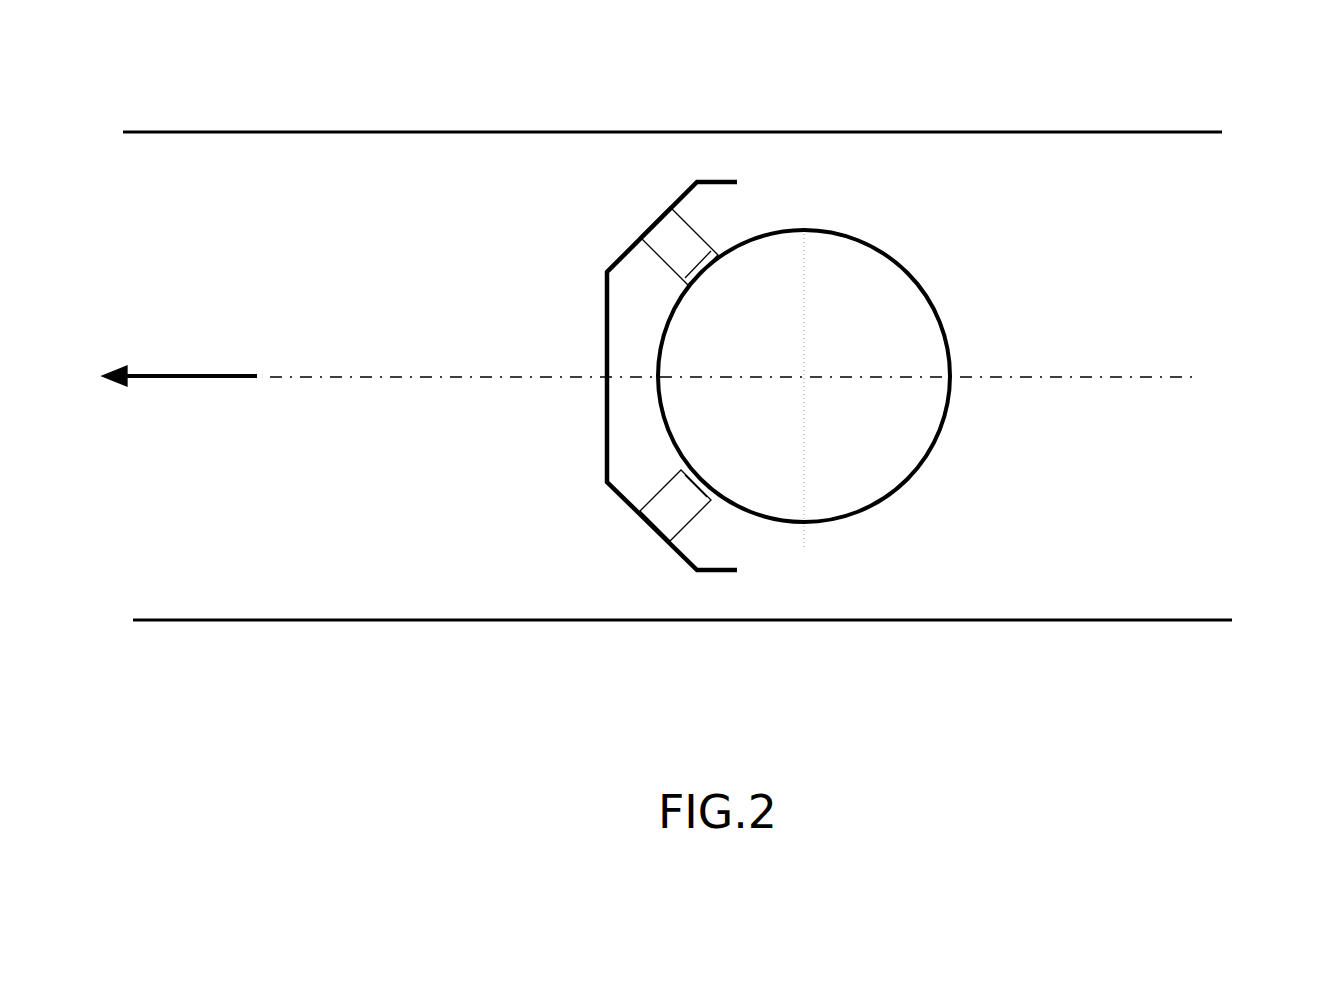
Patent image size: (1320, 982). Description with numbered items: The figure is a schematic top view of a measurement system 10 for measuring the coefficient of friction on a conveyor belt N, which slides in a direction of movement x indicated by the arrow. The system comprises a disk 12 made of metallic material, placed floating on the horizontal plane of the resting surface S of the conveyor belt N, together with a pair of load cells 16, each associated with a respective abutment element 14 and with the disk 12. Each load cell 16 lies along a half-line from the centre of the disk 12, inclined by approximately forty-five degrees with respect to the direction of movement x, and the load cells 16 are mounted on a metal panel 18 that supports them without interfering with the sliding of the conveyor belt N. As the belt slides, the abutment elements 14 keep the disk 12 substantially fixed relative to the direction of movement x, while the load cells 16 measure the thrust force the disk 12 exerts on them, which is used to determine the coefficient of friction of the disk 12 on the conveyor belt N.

The measurement system 10 is at (808, 192).
The disk 12 is at (897, 258).
The abutment element 14 is at (706, 501).
The load cell 16 is at (690, 522).
The metal panel 18 is at (606, 484).
The conveyor belt N is at (684, 131).
The resting surface S is at (1170, 577).
The direction of movement x is at (197, 380).